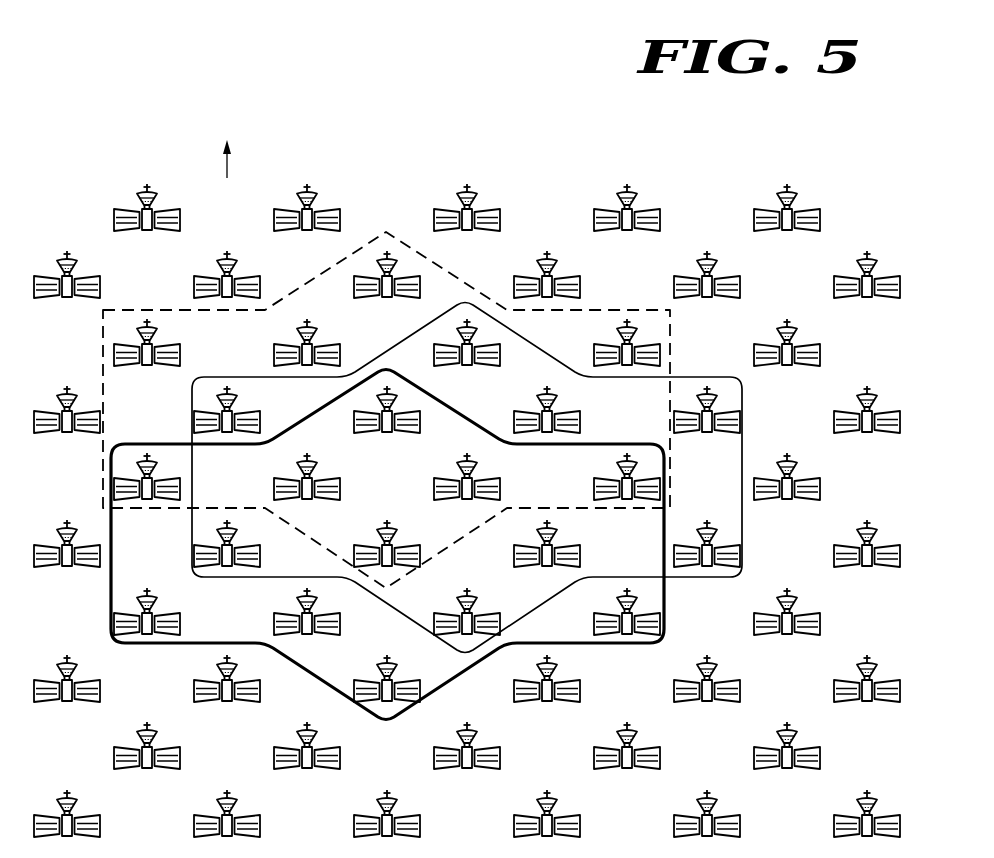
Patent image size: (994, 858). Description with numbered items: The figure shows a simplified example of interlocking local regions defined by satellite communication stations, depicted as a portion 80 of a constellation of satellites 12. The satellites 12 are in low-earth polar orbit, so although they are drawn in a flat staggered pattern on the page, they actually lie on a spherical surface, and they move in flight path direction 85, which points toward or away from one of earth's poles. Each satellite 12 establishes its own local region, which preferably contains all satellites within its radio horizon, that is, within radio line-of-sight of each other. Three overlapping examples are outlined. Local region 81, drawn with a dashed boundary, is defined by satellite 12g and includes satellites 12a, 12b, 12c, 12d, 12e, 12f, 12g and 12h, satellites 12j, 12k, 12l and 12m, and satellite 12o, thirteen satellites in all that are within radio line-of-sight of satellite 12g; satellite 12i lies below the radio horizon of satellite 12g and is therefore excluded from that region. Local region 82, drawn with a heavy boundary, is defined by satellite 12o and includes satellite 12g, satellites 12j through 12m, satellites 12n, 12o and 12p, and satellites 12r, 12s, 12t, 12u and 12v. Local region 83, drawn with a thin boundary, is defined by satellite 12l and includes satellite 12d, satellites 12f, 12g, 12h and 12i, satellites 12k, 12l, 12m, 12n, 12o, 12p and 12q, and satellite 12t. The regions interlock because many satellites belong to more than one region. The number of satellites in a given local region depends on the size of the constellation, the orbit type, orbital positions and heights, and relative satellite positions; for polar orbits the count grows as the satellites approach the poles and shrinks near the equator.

The satellite 12 is at (784, 234).
The satellite 12a is at (386, 300).
The satellite 12b is at (148, 368).
The satellite 12c is at (276, 351).
The satellite 12d is at (466, 370).
The satellite 12e is at (595, 352).
The satellite 12f is at (256, 418).
The satellite 12g is at (385, 436).
The satellite 12h is at (578, 420).
The satellite 12i is at (707, 434).
The satellite 12j is at (147, 503).
The satellite 12k is at (276, 485).
The satellite 12l is at (435, 485).
The satellite 12m is at (594, 487).
The satellite 12n is at (258, 554).
The satellite 12o is at (371, 537).
The satellite 12p is at (578, 553).
The satellite 12q is at (699, 520).
The satellite 12r is at (146, 591).
The satellite 12s is at (277, 619).
The satellite 12t is at (476, 590).
The satellite 12u is at (596, 622).
The satellite 12v is at (381, 657).
The portion of constellation 80 is at (695, 146).
The local region 81 is at (609, 308).
The local region 82 is at (161, 645).
The local region 83 is at (703, 376).
The flight path direction 85 is at (220, 166).